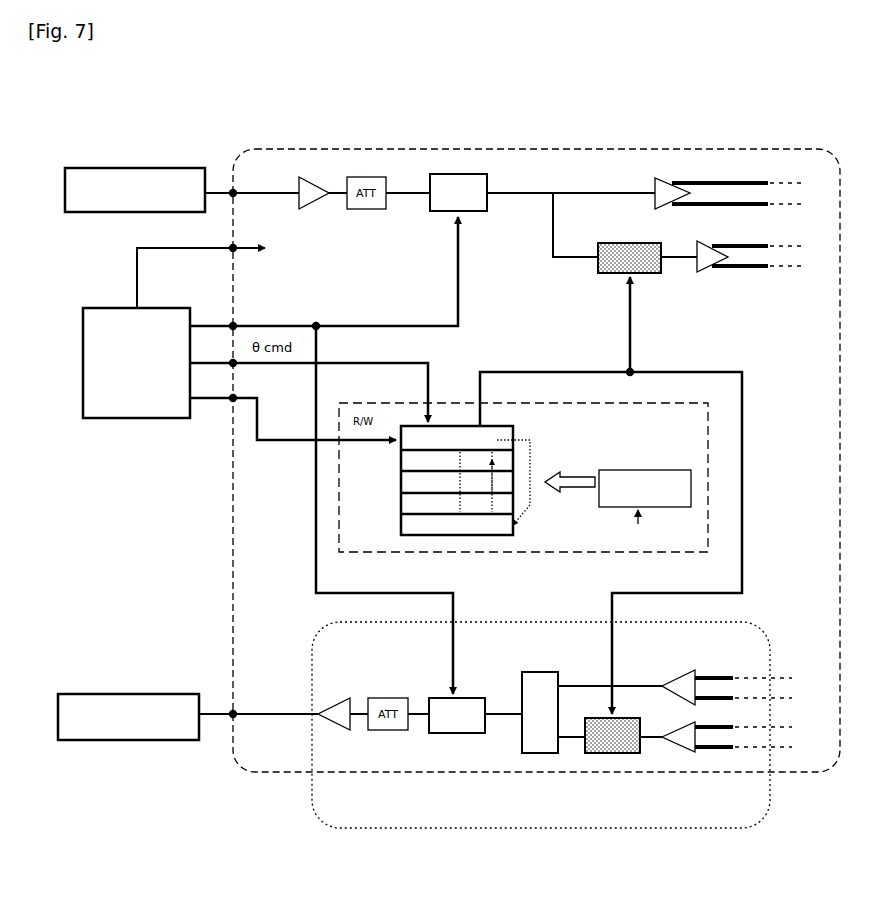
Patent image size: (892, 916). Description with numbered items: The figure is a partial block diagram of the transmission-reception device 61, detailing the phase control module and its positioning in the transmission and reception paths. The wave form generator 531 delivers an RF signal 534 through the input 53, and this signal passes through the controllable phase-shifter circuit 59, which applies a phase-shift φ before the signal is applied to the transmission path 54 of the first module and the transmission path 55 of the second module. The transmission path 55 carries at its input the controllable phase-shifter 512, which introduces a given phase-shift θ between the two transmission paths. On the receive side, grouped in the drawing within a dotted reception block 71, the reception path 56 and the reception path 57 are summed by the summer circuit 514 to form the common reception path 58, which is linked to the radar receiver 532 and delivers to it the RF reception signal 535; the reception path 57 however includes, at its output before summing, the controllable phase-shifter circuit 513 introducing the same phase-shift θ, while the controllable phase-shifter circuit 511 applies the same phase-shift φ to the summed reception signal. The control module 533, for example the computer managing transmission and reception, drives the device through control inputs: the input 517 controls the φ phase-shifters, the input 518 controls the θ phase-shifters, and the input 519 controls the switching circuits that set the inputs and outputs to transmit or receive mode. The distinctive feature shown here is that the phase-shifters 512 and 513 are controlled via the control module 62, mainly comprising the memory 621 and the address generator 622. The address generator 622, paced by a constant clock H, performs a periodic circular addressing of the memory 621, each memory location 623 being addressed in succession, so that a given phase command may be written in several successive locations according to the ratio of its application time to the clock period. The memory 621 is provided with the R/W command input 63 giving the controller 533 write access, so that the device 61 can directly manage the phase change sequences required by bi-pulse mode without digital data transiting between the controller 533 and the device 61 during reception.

The input 53 is at (252, 156).
The transmission path 54 is at (571, 161).
The transmission path 55 is at (548, 233).
The reception path 56 is at (675, 668).
The reception path 57 is at (716, 763).
The common reception path 58 is at (258, 749).
The controllable phase-shifter circuit 59 is at (458, 161).
The transmission-reception device 61 is at (536, 427).
The control module 62 is at (563, 477).
The R/W command input 63 is at (293, 412).
The reception module 71 is at (531, 755).
The controllable phase-shifter circuit 511 is at (454, 751).
The controllable phase-shifter 512 is at (645, 289).
The controllable phase-shifter circuit 513 is at (610, 761).
The summer circuit 514 is at (531, 745).
The input 517 is at (315, 273).
The input 518 is at (611, 495).
The input 519 is at (210, 272).
The wave form generator 531 is at (135, 153).
The radar receiver 532 is at (128, 753).
The control module 533 is at (136, 389).
The RF signal 534 is at (212, 166).
The RF reception signal 535 is at (212, 684).
The memory 621 is at (457, 518).
The address generator 622 is at (618, 485).
The memory location 623 is at (430, 485).